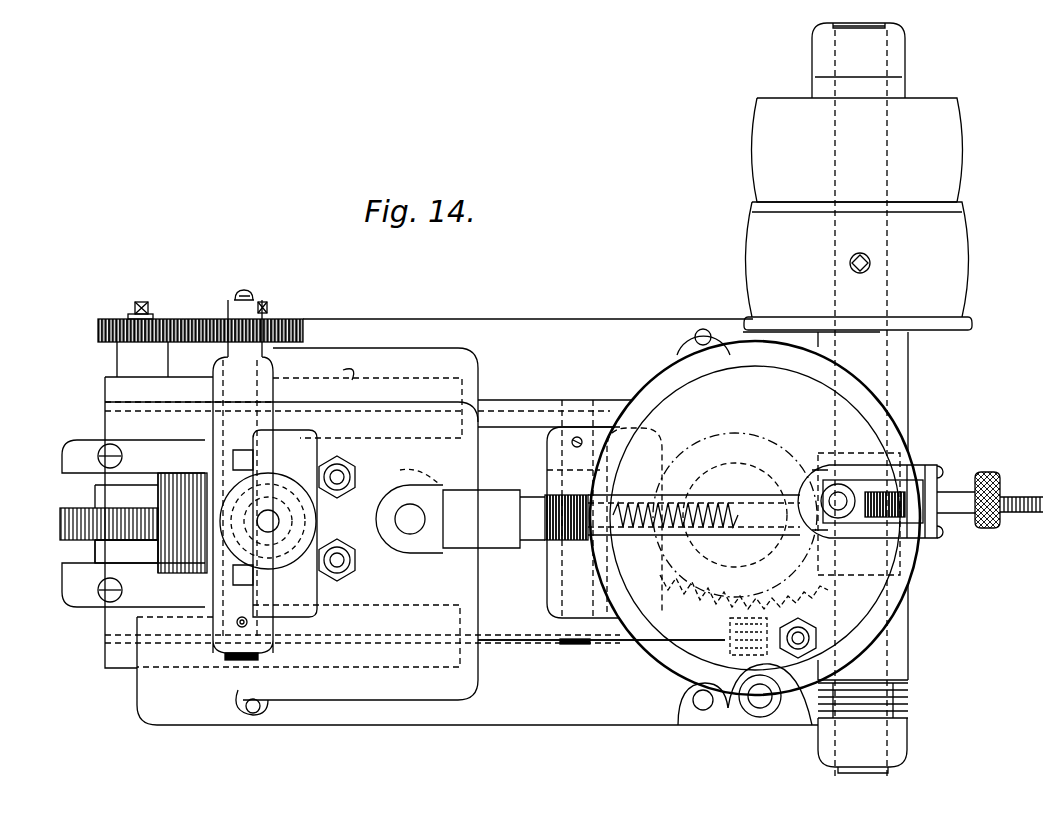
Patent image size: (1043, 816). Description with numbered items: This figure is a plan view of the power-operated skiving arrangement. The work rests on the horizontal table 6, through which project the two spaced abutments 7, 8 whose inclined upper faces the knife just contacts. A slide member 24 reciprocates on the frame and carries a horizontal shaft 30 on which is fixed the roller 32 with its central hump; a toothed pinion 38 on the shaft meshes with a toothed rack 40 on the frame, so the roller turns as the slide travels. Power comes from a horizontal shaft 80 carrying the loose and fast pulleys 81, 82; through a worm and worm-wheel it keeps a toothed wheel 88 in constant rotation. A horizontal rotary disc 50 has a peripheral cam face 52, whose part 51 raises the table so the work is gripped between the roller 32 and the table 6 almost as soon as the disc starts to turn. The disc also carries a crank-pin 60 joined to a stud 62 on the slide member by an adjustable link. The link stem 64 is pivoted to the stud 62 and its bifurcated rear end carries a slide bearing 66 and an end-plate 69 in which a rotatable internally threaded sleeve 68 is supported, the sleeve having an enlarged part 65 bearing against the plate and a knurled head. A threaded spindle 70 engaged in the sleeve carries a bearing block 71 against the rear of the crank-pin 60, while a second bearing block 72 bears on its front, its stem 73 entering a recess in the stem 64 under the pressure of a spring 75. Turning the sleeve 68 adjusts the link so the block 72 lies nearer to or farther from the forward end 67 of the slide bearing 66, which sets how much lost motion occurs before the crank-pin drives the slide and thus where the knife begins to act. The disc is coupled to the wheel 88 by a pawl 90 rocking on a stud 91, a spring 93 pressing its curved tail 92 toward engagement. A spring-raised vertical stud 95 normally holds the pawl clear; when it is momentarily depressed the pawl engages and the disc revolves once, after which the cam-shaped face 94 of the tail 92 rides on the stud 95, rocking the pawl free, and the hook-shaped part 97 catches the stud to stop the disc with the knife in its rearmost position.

The horizontal table 6 is at (198, 560).
The abutment 7 is at (126, 551).
The abutment 8 is at (109, 512).
The slide member 24 is at (351, 529).
The horizontal shaft 30 is at (232, 657).
The roller 32 is at (292, 435).
The toothed pinion 38 is at (267, 320).
The toothed rack 40 is at (117, 375).
The rotary disc 50 is at (638, 640).
The cam part 51 is at (567, 547).
The peripheral cam face 52 is at (577, 612).
The crank-pin 60 is at (857, 480).
The stud 62 is at (410, 522).
The link stem 64 is at (634, 520).
The enlarged sleeve part 65 is at (876, 522).
The slide bearing 66 is at (803, 527).
The forward end of slide bearing 67 is at (806, 516).
The internally screw-threaded sleeve 68 is at (978, 516).
The end-plate 69 is at (947, 478).
The screw-threaded spindle 70 is at (896, 508).
The bearing block 71 is at (868, 500).
The bearing block 72 is at (834, 505).
The stem 73 is at (735, 515).
The spring 75 is at (694, 501).
The horizontal shaft 80 is at (860, 768).
The loose pulley 81 is at (857, 112).
The fast pulley 82 is at (858, 405).
The toothed wheel 88 is at (690, 638).
The pawl 90 is at (830, 613).
The stud 91 is at (907, 636).
The curved tail end 92 is at (723, 712).
The spring 93 is at (790, 727).
The cam-shaped outer face 94 is at (714, 652).
The vertical stud 95 is at (762, 720).
The hook-shaped part 97 is at (790, 656).